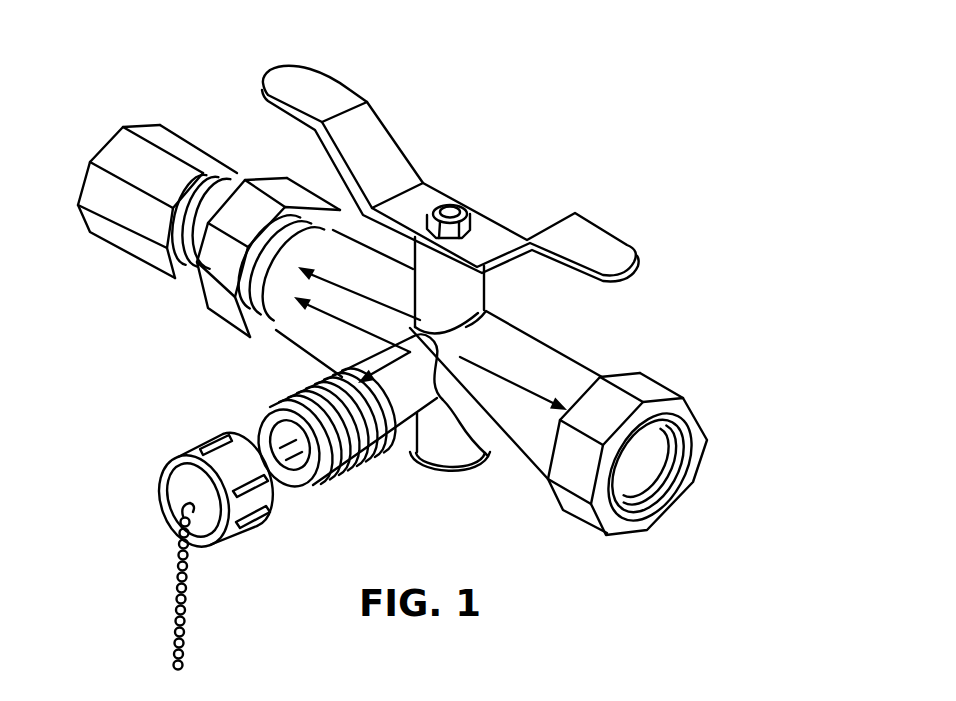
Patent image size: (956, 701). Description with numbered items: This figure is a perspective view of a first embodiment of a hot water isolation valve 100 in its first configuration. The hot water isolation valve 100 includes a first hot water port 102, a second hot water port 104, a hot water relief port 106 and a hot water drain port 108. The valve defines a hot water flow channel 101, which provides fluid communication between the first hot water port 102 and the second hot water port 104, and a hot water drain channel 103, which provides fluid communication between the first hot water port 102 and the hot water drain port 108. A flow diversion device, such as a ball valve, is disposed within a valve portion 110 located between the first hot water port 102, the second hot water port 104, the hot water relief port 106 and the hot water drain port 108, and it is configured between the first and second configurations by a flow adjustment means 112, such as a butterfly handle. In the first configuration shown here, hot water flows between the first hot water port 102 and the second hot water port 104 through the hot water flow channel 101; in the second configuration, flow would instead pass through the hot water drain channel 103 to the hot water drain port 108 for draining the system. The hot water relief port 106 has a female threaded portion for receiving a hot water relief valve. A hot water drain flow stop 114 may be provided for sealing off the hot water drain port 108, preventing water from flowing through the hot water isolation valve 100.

The hot water isolation valve 100 is at (544, 84).
The hot water flow channel 101 is at (483, 362).
The first hot water port 102 is at (147, 128).
The hot water drain channel 103 is at (393, 365).
The second hot water port 104 is at (688, 412).
The hot water relief port 106 is at (450, 483).
The hot water drain port 108 is at (262, 424).
The valve portion 110 is at (462, 408).
The flow adjustment means 112 is at (563, 220).
The hot water drain flow stop 114 is at (183, 452).